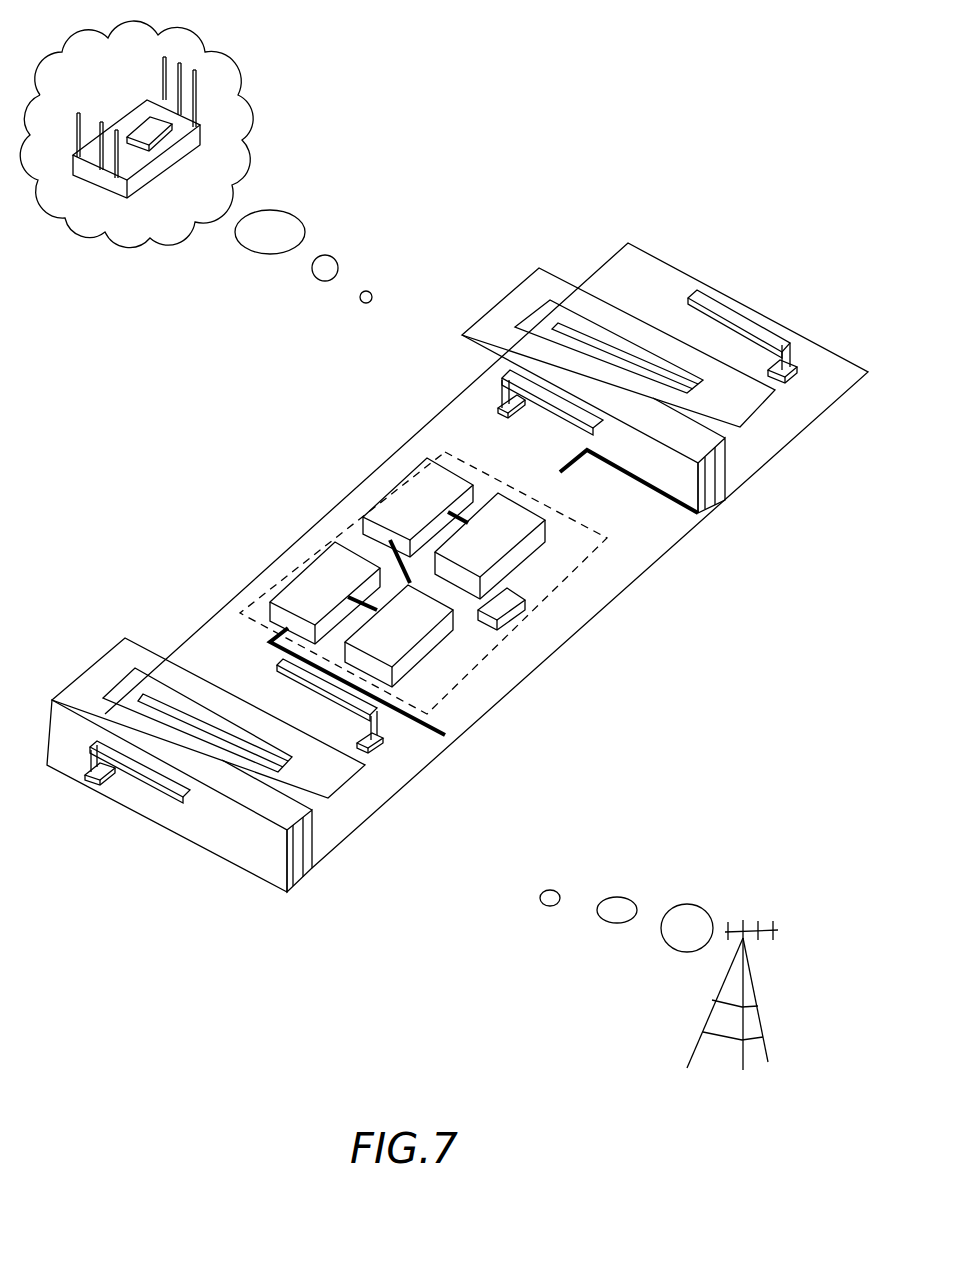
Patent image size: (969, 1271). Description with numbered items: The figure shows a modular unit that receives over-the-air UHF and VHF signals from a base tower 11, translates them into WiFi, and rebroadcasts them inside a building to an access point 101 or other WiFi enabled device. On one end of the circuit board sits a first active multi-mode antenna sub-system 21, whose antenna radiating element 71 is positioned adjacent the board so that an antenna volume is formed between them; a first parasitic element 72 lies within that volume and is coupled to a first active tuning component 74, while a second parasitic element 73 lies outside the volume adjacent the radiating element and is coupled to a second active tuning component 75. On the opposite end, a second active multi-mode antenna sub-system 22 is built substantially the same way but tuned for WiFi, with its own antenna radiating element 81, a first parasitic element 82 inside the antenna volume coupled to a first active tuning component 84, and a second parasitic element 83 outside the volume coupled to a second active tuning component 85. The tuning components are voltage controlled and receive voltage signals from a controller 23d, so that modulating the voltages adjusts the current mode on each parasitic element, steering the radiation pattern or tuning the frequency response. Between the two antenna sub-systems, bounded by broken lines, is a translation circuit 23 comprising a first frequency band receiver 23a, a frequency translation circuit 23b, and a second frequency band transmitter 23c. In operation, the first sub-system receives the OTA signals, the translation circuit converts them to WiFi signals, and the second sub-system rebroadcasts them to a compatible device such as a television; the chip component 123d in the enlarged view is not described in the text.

The base tower 11 is at (753, 957).
The first active multi-mode antenna sub-system 21 is at (313, 892).
The second active multi-mode antenna sub-system 22 is at (730, 535).
The translation circuit 23 is at (445, 452).
The first frequency band receiver 23a is at (308, 580).
The frequency translation circuit 23b is at (404, 498).
The second frequency band transmitter 23c is at (523, 548).
The controller 23d is at (518, 613).
The antenna radiating element 71 is at (97, 673).
The first parasitic element 72 is at (148, 773).
The second parasitic element 73 is at (282, 664).
The first active tuning component 74 is at (84, 784).
The second active tuning component 75 is at (357, 750).
The antenna radiating element 81 is at (525, 292).
The first parasitic element 82 is at (603, 422).
The second parasitic element 83 is at (708, 300).
The first active tuning component 84 is at (500, 408).
The second active tuning component 85 is at (800, 367).
The access point 101 is at (190, 147).
The chip component 123d is at (147, 124).